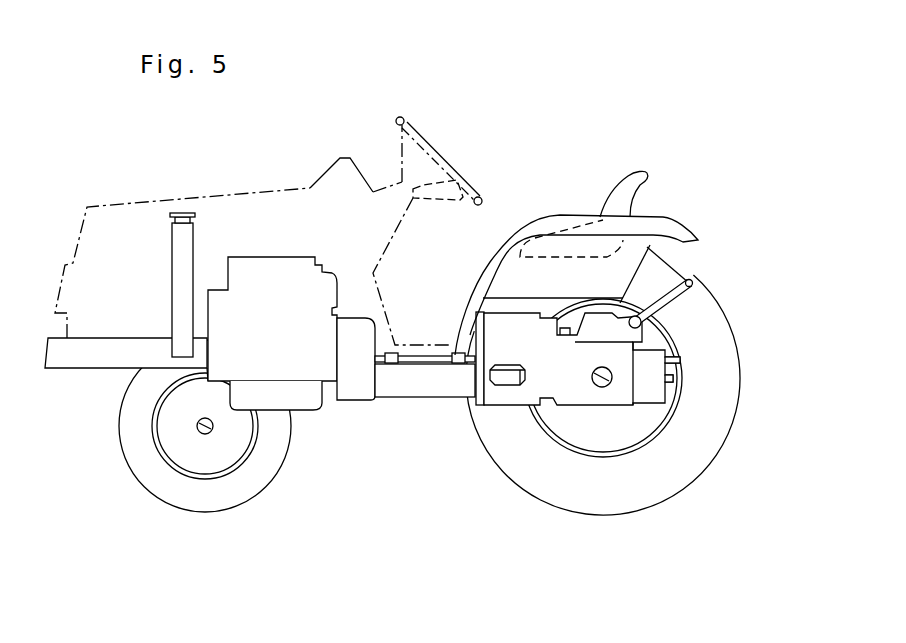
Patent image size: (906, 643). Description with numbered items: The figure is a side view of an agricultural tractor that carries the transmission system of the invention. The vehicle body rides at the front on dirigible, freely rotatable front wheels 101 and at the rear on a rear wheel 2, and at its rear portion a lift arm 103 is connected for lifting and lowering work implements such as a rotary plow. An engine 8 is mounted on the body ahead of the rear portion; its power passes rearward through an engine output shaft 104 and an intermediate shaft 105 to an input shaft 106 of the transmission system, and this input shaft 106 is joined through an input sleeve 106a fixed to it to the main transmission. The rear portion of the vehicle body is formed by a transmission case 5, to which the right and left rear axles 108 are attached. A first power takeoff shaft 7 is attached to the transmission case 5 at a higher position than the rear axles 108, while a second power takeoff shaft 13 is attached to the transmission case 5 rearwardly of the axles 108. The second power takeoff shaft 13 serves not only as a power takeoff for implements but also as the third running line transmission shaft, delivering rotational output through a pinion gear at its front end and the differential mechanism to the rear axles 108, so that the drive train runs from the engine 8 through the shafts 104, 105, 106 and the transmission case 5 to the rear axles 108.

The rear wheel 2 is at (542, 502).
The transmission case 5 is at (513, 405).
The first power takeoff shaft 7 is at (680, 360).
The engine 8 is at (303, 368).
The second power takeoff shaft 13 is at (667, 385).
The front wheel 101 is at (150, 495).
The lift arm 103 is at (677, 302).
The engine output shaft 104 is at (377, 367).
The intermediate shaft 105 is at (428, 365).
The input shaft 106 is at (457, 353).
The input sleeve 106a is at (450, 353).
The rear axle 108 is at (603, 387).